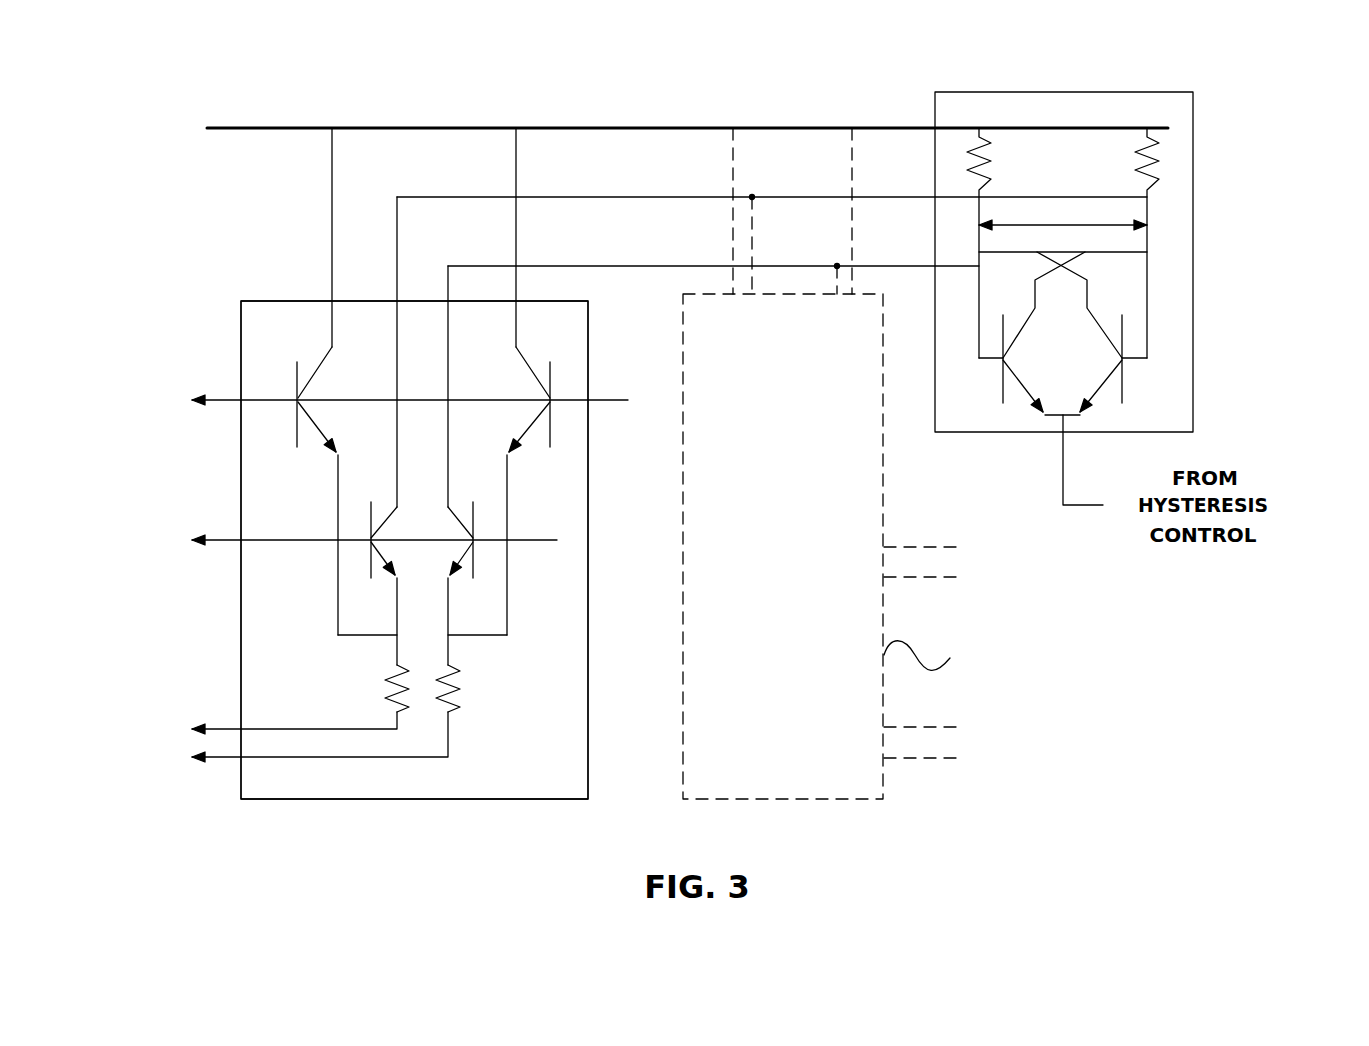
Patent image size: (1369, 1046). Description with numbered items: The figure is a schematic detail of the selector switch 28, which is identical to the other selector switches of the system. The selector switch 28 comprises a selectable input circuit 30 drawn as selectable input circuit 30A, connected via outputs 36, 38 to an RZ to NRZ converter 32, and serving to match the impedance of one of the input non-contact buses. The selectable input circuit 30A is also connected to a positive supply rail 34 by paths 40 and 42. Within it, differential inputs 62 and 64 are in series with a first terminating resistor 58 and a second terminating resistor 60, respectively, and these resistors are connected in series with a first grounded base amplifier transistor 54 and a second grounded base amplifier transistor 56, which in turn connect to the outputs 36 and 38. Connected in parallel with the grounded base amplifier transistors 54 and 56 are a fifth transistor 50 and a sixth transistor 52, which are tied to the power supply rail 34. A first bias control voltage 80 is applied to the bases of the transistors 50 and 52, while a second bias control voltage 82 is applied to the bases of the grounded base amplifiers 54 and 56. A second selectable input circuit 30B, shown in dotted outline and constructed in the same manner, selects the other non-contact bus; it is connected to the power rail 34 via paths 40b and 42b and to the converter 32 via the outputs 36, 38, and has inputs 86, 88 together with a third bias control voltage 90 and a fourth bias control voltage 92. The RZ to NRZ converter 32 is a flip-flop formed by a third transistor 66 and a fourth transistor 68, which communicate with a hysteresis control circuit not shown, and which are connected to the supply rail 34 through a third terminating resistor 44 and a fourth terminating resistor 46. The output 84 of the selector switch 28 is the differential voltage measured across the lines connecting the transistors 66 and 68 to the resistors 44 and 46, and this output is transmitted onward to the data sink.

The selector switch 28 is at (1200, 710).
The selectable input circuit 30 is at (241, 327).
The selectable input circuit 30A is at (588, 487).
The selectable input circuit 30B is at (884, 487).
The RZ to NRZ converter 32 is at (1193, 258).
The positive supply rail 34 is at (628, 126).
The output 36 is at (635, 195).
The output 38 is at (635, 265).
The path 40 is at (332, 168).
The path 40b is at (735, 167).
The path 42 is at (516, 168).
The path 42b is at (852, 220).
The terminating resistor R3 44 is at (993, 243).
The terminating resistor R4 46 is at (1132, 243).
The transistor Q5 50 is at (337, 472).
The transistor Q6 52 is at (508, 472).
The grounded base amplifier transistor Q1 54 is at (375, 557).
The grounded base amplifier transistor Q2 56 is at (468, 557).
The terminating resistor R1 58 is at (381, 691).
The terminating resistor R2 60 is at (464, 691).
The differential input 62 is at (251, 727).
The differential input 64 is at (274, 750).
The transistor Q3 66 is at (1063, 378).
The transistor Q4 68 is at (1092, 332).
The bias control voltage 80 is at (382, 407).
The bias control voltage 82 is at (347, 548).
The output 84 is at (1072, 224).
The input 86 is at (964, 725).
The input 88 is at (964, 768).
The bias control voltage 90 is at (947, 547).
The bias control voltage 92 is at (947, 588).